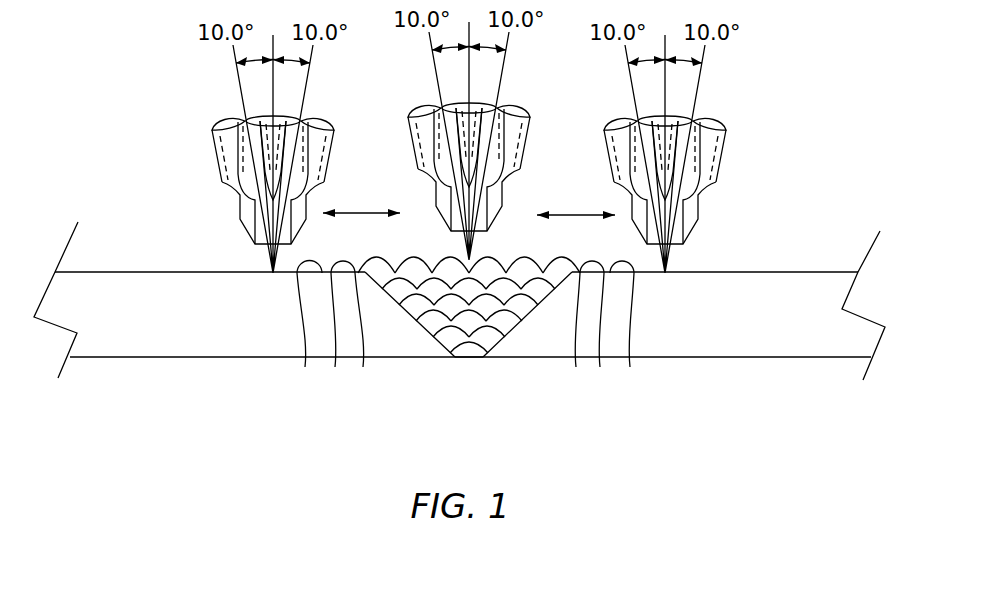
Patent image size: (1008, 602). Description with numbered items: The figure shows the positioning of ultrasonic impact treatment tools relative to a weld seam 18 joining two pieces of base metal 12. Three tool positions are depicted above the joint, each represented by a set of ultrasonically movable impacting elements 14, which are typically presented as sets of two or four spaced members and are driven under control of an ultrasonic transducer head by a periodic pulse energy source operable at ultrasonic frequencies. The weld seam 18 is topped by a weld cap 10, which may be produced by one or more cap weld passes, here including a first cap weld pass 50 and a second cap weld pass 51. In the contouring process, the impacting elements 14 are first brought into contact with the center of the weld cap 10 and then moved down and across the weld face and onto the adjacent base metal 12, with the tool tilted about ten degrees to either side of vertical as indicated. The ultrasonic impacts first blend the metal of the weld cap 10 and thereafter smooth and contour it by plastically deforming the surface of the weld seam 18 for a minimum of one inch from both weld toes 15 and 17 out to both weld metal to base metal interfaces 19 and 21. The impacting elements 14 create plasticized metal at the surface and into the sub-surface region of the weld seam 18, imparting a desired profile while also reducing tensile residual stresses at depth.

The weld cap 10 is at (518, 257).
The base metal 12 is at (305, 367).
The impacting elements 14 is at (211, 160).
The weld toe 15 is at (363, 367).
The weld toe 17 is at (576, 367).
The weld seam 18 is at (471, 358).
The weld metal to base metal interface 19 is at (335, 367).
The weld metal to base metal interface 21 is at (600, 367).
The first cap weld pass 50 is at (443, 258).
The second cap weld pass 51 is at (497, 253).